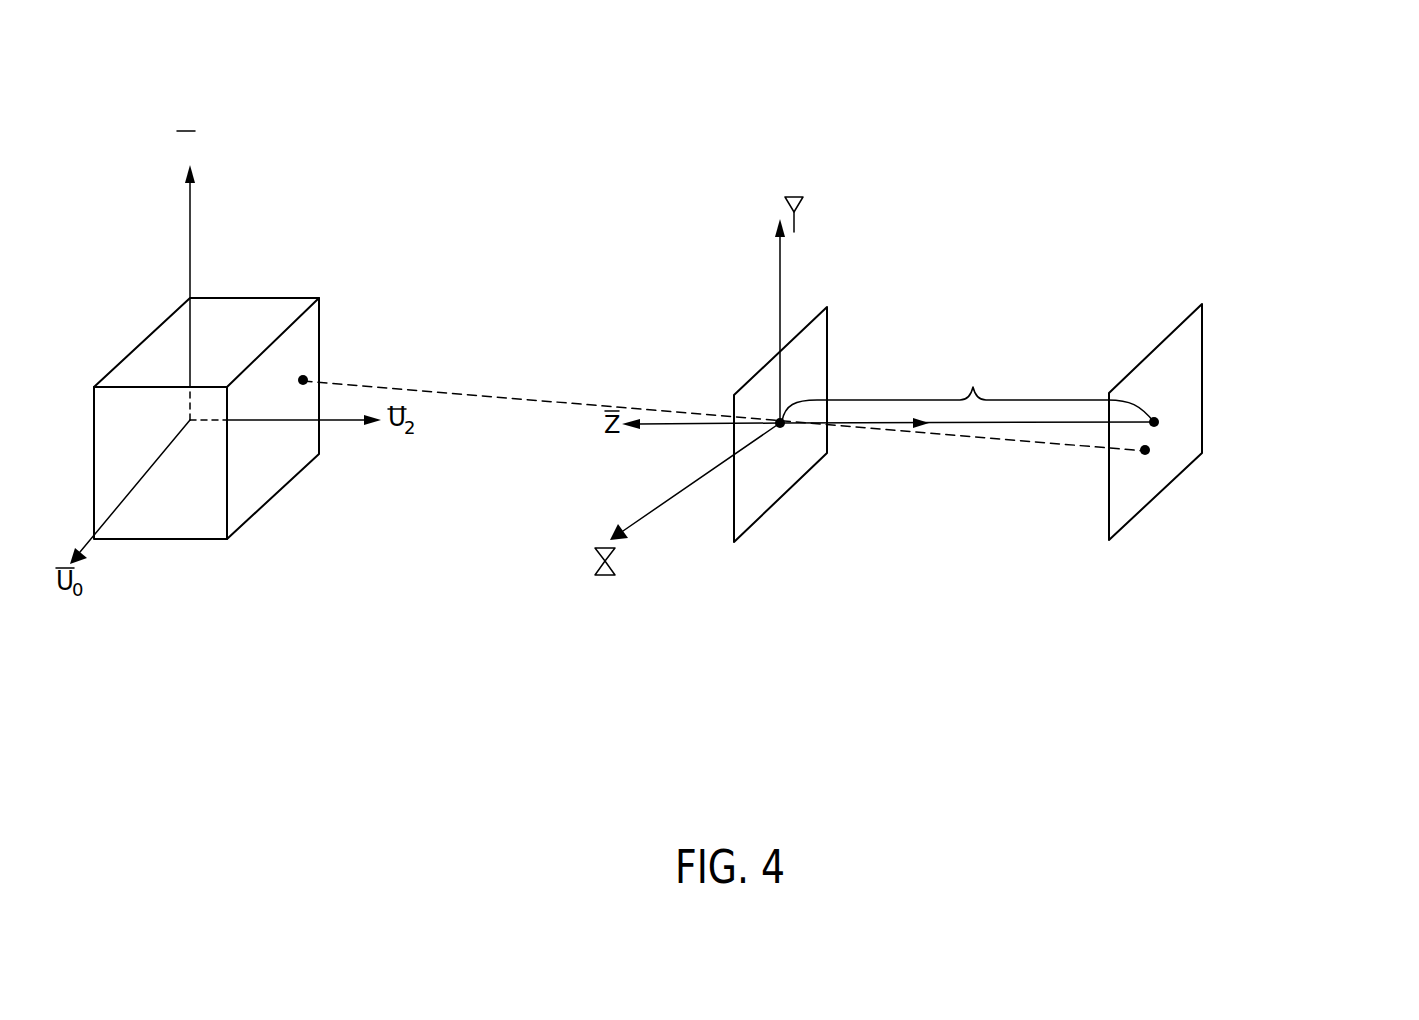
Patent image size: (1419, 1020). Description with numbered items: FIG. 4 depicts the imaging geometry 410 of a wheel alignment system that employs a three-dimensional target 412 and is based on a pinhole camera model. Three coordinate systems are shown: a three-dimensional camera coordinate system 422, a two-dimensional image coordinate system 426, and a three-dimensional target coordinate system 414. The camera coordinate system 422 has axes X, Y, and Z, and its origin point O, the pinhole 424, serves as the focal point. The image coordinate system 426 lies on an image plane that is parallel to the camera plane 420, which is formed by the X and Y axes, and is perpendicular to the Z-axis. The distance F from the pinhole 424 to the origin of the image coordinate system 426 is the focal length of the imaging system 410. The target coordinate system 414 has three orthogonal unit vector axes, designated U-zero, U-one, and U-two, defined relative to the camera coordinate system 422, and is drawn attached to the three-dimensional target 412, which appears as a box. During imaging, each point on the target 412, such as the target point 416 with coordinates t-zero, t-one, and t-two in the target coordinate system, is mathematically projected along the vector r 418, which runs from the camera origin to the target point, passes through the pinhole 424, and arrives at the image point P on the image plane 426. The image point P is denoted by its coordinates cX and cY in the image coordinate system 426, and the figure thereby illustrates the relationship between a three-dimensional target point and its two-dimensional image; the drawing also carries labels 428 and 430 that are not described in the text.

The imaging geometry 410 is at (574, 131).
The three-dimensional target 412 is at (268, 501).
The 3D target coordinate system 414 is at (188, 253).
The point Φ 416 is at (304, 375).
The vector r 418 is at (552, 397).
The camera plane 420 is at (758, 373).
The 3D camera coordinate system 422 is at (782, 252).
The origin point O (pinhole) 424 is at (779, 430).
The 2D image coordinate system (image plane) 426 is at (1203, 330).
The image point P 428 is at (1150, 452).
The optical axis / focal length F 430 is at (987, 424).